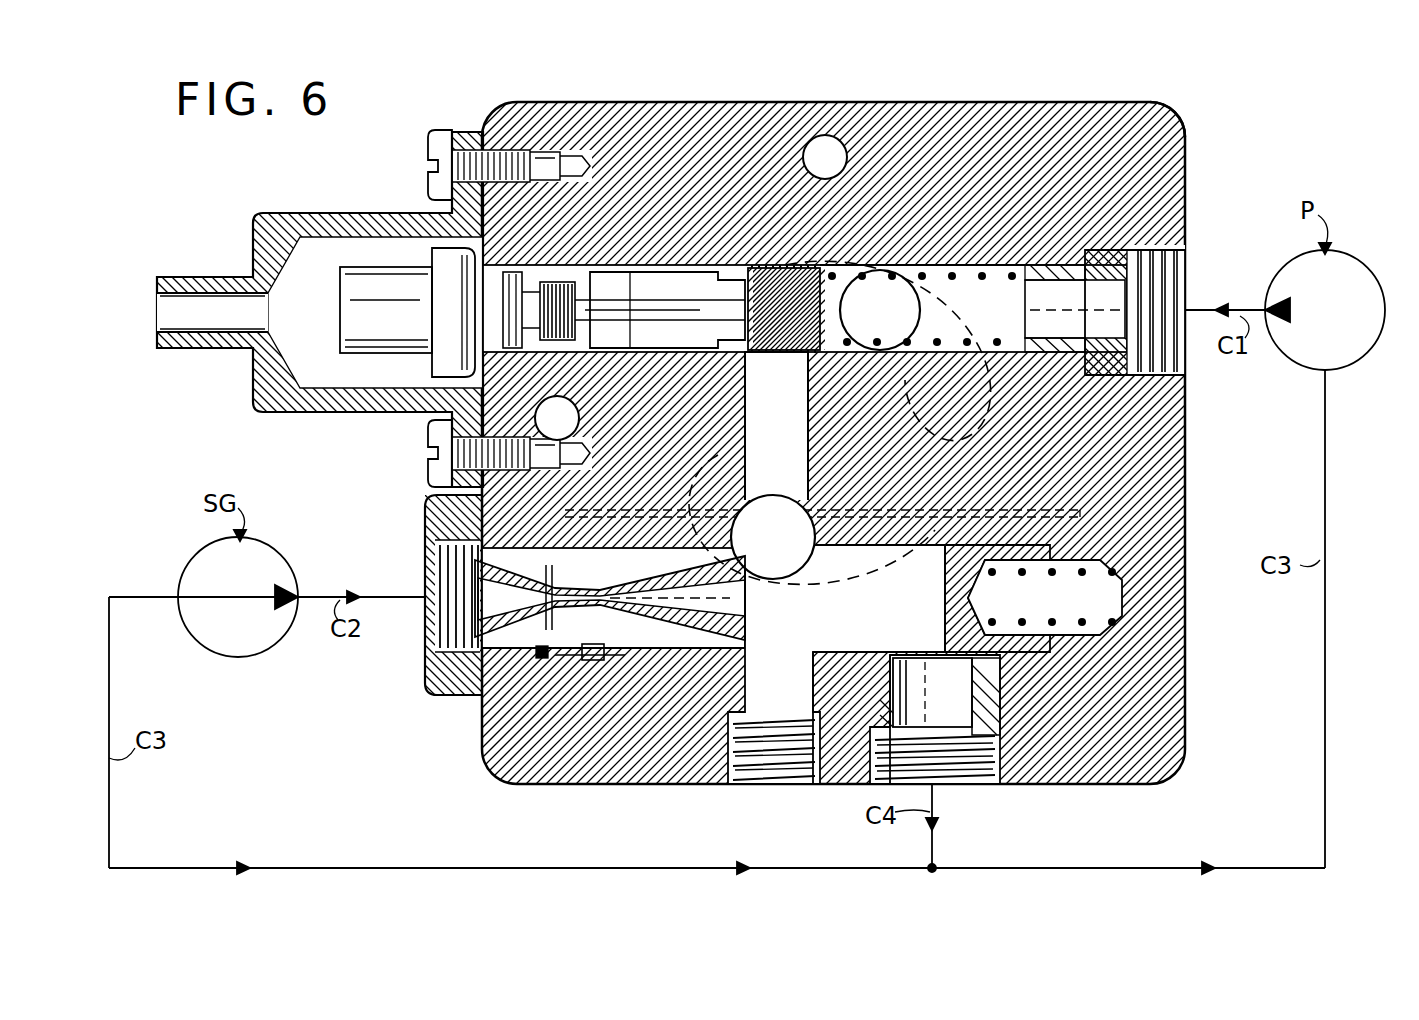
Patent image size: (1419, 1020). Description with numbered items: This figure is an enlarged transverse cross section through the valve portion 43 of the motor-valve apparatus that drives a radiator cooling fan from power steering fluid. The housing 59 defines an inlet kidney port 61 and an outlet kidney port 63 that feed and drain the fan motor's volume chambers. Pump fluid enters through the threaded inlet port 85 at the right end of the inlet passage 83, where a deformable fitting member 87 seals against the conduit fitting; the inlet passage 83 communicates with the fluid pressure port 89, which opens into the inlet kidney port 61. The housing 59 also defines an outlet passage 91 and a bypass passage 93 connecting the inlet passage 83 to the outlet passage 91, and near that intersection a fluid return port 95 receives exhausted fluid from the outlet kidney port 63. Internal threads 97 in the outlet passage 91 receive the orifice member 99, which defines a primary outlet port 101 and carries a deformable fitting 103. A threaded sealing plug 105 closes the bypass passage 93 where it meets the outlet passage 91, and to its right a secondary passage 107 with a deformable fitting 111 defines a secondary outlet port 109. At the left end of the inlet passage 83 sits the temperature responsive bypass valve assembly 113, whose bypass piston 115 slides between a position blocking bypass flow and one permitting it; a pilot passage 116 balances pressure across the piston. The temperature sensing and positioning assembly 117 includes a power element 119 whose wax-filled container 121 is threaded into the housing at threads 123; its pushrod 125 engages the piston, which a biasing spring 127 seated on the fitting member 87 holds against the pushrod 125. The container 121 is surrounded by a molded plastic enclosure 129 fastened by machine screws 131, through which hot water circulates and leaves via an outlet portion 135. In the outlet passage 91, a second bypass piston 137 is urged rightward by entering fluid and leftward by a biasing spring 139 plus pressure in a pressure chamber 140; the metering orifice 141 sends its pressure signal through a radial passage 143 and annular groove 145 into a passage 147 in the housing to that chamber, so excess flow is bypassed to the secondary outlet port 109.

The valve portion 43 is at (789, 97).
The housing 59 is at (1105, 126).
The inlet kidney port 61 is at (996, 402).
The outlet kidney port 63 is at (718, 470).
The inlet passage 83 is at (935, 266).
The threaded inlet port 85 is at (1180, 268).
The deformable fitting member 87 is at (1055, 288).
The fluid pressure port 89 is at (880, 310).
The outlet passage 91 is at (868, 650).
The bypass passage 93 is at (810, 398).
The fluid return port 95 is at (773, 537).
The internal threads 97 is at (590, 660).
The orifice member 99 is at (425, 523).
The primary outlet port 101 is at (428, 622).
The deformable fitting 103 is at (500, 678).
The threaded sealing plug 105 is at (772, 758).
The secondary passage 107 is at (975, 670).
The secondary outlet port 109 is at (968, 762).
The deformable fitting 111 is at (996, 705).
The temperature responsive bypass valve assembly 113 is at (606, 262).
The bypass piston 115 is at (753, 267).
The pilot passage 116 is at (772, 426).
The temperature sensing and positioning assembly 117 is at (406, 203).
The power element 119 is at (539, 266).
The container 121 is at (368, 360).
The threads 123 is at (548, 334).
The pushrod 125 is at (656, 322).
The biasing spring 127 is at (970, 268).
The molded plastic enclosure 129 is at (292, 214).
The machine screws 131 is at (440, 135).
The outlet portion 135 is at (211, 274).
The second bypass piston 137 is at (948, 588).
The biasing spring 139 is at (1050, 574).
The pressure chamber 140 is at (1045, 597).
The metering orifice 141 is at (648, 598).
The radial passage 143 is at (612, 655).
The annular groove 145 is at (542, 658).
The passage 147 is at (632, 507).